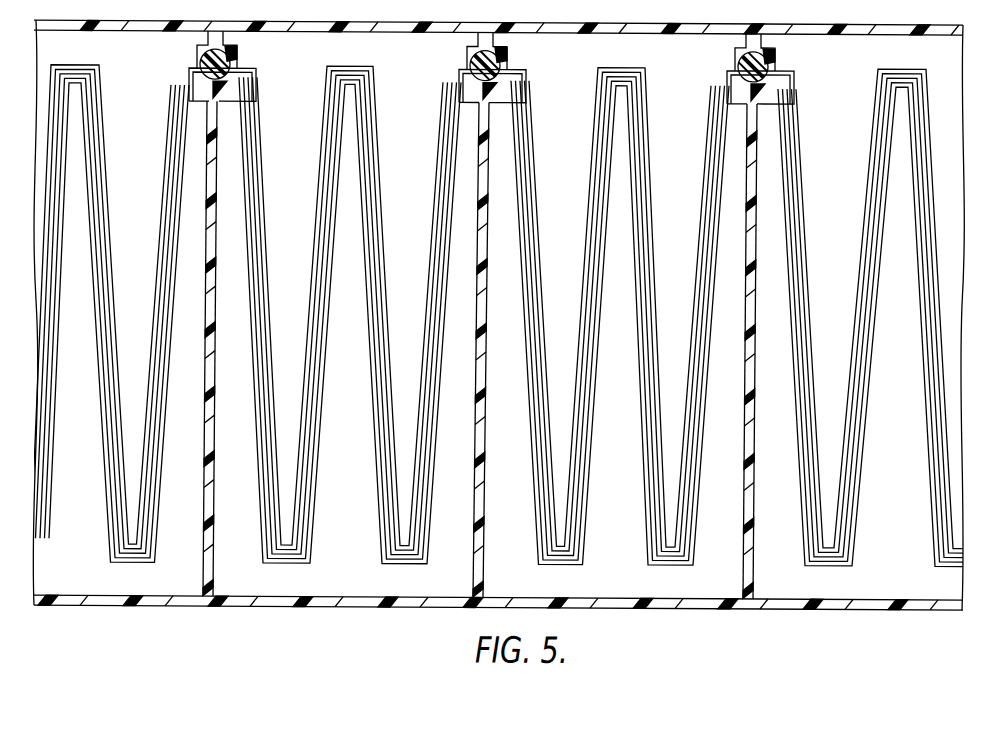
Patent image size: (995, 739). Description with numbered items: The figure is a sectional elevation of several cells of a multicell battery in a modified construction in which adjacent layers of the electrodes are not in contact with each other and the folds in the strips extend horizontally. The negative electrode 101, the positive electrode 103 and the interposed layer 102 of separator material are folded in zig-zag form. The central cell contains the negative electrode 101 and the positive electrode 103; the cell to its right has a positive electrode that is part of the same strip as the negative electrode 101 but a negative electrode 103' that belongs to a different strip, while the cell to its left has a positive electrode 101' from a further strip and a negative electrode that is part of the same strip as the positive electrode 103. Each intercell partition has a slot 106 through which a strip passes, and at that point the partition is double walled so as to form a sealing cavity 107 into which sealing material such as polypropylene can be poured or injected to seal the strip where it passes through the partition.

The negative electrode 101 is at (444, 317).
The positive electrode 101' is at (110, 314).
The interposed layer of separator material 102 is at (422, 492).
The positive electrode 103 is at (317, 323).
The negative electrode 103' is at (741, 317).
The slot 106 is at (201, 61).
The sealing cavity 107 is at (237, 54).